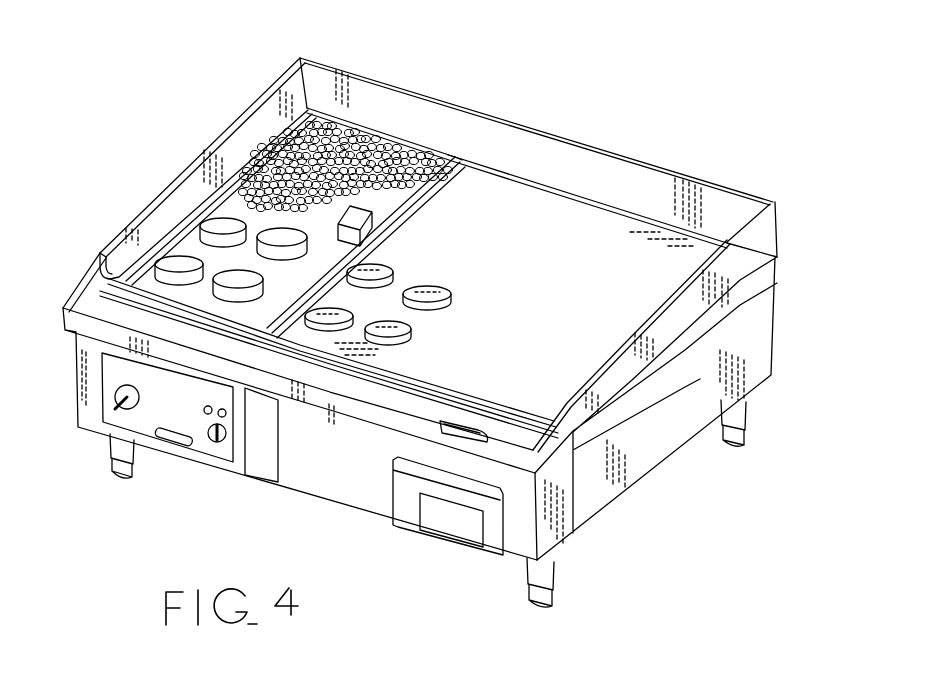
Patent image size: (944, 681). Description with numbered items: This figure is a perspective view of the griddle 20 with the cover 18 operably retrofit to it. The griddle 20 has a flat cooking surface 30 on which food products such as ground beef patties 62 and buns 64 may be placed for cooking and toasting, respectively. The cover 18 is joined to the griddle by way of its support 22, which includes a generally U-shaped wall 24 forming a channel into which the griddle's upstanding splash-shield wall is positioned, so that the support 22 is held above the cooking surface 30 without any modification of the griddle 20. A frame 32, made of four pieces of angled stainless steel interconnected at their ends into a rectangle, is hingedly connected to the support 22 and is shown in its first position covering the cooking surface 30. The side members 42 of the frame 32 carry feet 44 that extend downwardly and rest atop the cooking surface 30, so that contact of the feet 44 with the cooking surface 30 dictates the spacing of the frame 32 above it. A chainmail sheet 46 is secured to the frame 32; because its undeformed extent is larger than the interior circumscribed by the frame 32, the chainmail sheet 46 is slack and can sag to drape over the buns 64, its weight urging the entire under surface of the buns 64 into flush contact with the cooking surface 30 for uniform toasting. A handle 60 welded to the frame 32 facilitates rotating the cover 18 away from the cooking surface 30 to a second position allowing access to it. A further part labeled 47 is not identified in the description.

The cover 18 is at (431, 199).
The griddle 20 is at (794, 303).
The support 22 is at (319, 73).
The U-shaped wall 24 is at (190, 187).
The cooking surface 30 is at (590, 284).
The frame 32 is at (466, 157).
The side members 42 is at (183, 217).
The feet 44 is at (457, 167).
The chainmail sheet 46 is at (345, 140).
The rail side flange 47 is at (388, 214).
The handle 60 is at (362, 228).
The ground beef patties 62 is at (392, 271).
The buns 64 is at (243, 226).